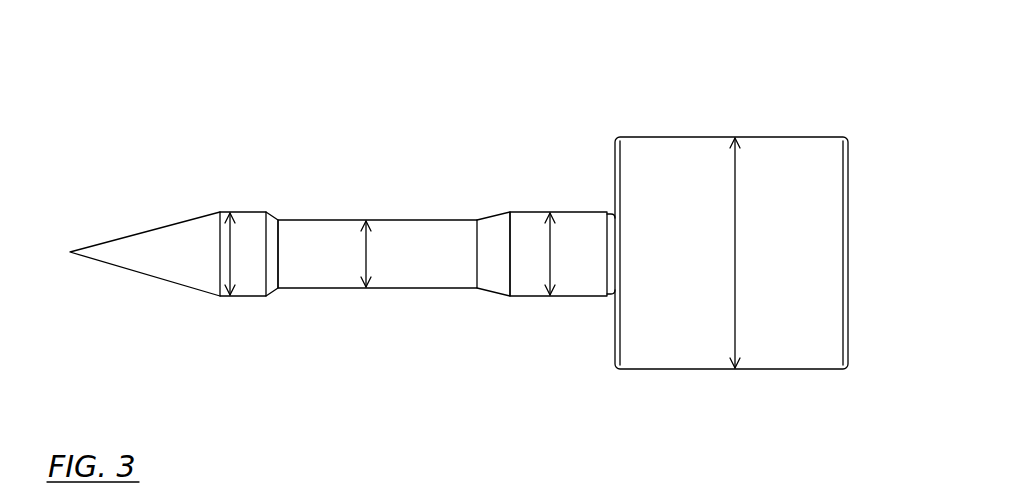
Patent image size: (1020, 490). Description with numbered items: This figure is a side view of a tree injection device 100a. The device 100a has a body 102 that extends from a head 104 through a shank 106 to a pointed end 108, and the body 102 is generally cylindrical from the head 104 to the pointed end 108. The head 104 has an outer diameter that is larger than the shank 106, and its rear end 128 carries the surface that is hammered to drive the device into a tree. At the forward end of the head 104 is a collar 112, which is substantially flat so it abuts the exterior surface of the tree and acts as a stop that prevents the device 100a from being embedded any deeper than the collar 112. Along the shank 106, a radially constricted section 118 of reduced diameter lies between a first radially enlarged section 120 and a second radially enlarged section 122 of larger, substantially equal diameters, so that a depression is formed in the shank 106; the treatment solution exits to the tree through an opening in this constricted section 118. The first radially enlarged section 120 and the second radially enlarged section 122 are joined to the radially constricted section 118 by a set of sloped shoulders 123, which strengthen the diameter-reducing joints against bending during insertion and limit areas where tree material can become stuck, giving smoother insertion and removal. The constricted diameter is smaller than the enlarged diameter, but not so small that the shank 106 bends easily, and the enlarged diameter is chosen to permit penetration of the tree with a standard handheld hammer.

The tree injection device 100a is at (282, 92).
The body 102 is at (847, 397).
The head 104 is at (614, 130).
The shank 106 is at (53, 128).
The pointed end 108 is at (62, 252).
The collar 112 is at (613, 170).
The radially constricted section 118 is at (280, 195).
The first radially enlarged section 120 is at (565, 298).
The second radially enlarged section 122 is at (248, 298).
The shoulders 123 is at (277, 297).
The rear end 128 is at (856, 170).